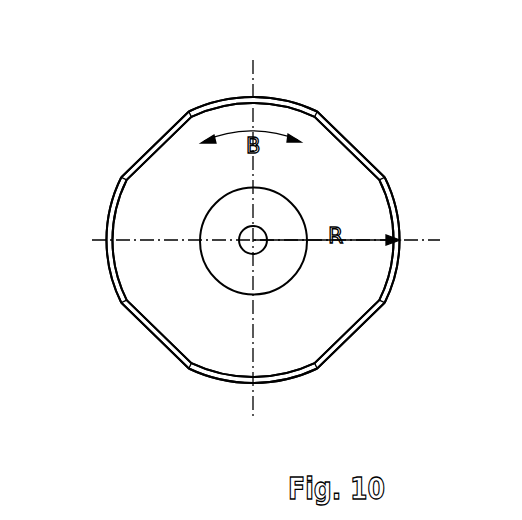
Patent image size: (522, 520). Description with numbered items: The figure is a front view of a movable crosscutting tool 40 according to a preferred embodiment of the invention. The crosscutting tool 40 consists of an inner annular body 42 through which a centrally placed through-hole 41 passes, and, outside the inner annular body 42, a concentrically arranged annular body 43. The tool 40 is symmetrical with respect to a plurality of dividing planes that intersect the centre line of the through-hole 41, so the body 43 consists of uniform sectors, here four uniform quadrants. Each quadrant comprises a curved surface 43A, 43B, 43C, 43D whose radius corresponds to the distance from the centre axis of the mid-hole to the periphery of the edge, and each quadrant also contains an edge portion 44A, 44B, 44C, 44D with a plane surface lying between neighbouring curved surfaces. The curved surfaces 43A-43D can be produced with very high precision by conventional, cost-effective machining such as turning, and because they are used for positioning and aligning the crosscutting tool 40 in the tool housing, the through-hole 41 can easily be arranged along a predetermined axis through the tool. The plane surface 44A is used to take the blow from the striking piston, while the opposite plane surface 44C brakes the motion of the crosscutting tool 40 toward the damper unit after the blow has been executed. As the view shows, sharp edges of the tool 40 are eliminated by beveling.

The crosscutting tool 40 is at (125, 121).
The through-hole 41 is at (241, 238).
The inner annular body 42 is at (268, 268).
The annular body 43 is at (150, 277).
The curved surface 43A is at (402, 227).
The curved surface 43B is at (268, 97).
The curved surface 43C is at (112, 196).
The curved surface 43D is at (213, 380).
The edge portion with plane surface 44A is at (338, 127).
The edge portion with plane surface 44B is at (172, 130).
The edge portion with plane surface 44C is at (155, 340).
The edge portion with plane surface 44D is at (352, 338).